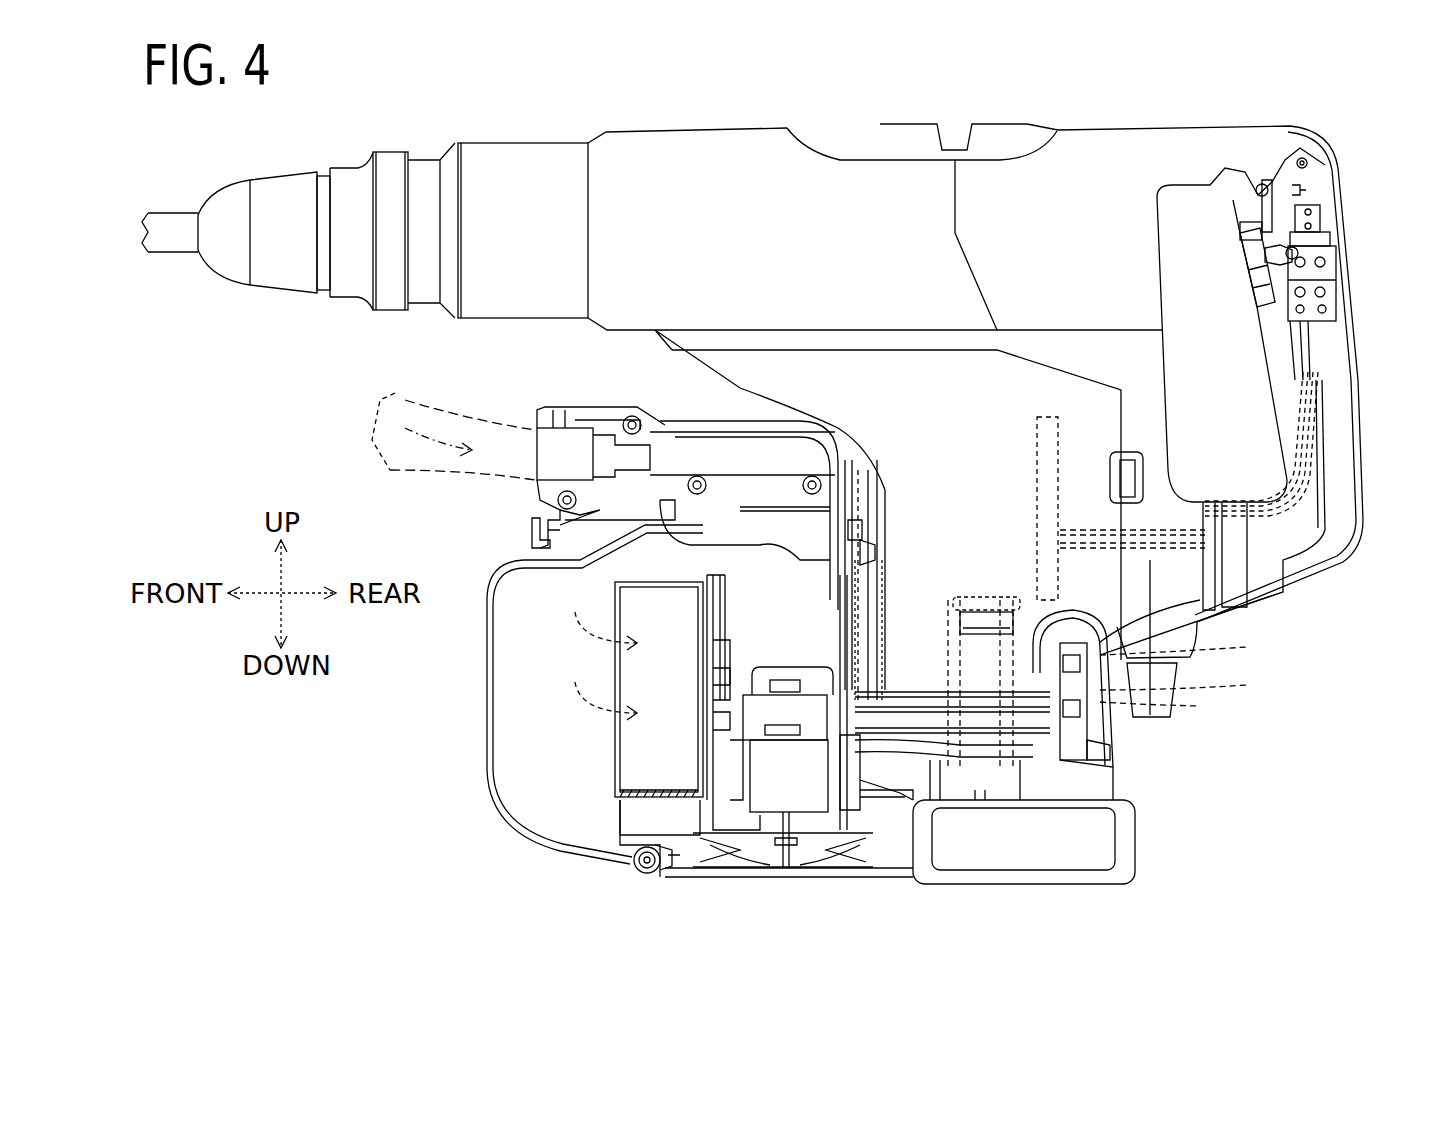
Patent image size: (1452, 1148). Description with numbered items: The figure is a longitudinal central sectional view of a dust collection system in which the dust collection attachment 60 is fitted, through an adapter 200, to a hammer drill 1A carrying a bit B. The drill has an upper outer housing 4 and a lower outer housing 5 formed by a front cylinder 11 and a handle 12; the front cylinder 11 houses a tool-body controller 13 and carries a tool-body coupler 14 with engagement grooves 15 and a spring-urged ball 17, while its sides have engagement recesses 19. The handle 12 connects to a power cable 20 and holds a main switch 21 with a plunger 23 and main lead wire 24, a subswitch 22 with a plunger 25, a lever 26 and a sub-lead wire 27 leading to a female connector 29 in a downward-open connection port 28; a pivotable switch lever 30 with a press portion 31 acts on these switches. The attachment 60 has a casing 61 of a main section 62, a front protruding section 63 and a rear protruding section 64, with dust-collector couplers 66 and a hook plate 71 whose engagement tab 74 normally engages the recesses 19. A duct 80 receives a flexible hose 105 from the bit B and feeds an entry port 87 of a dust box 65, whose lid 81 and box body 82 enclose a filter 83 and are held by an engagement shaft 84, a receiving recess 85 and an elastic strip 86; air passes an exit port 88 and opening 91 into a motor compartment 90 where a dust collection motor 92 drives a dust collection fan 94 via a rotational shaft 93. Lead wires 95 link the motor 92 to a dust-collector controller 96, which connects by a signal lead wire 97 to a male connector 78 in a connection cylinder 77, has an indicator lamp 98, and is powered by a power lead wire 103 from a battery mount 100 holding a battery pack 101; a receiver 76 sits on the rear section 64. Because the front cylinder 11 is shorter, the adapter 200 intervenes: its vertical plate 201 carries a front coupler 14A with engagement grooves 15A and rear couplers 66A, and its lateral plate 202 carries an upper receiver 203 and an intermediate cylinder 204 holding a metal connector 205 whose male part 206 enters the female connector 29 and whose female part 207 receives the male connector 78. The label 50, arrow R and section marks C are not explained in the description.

The hammer drill 1A is at (1353, 152).
The bit B is at (162, 225).
The upper outer housing 4 is at (626, 300).
The lower outer housing 5 is at (1200, 416).
The front cylinder 11 is at (970, 430).
The handle 12 is at (1335, 338).
The tool-body controller 13 is at (1045, 452).
The tool-body coupler 14 is at (845, 462).
The front coupler 14A is at (842, 596).
The engagement grooves 15 is at (886, 505).
The engagement grooves 15A is at (848, 562).
The ball 17 is at (880, 556).
The engagement recesses 19 is at (988, 598).
The power cable 20 is at (1110, 586).
The main switch 21 is at (1332, 302).
The subswitch 22 is at (1323, 215).
The plunger 23 is at (1250, 290).
The main lead wire 24 is at (1290, 403).
The plunger 25 is at (1323, 238).
The lever 26 is at (1268, 218).
The sub-lead wire 27 is at (1332, 402).
The connection port 28 is at (1205, 630).
The female connector 29 is at (1283, 593).
The switch lever 30 is at (1262, 255).
The press portion 31 is at (1258, 233).
The chuck 50 is at (350, 292).
The dust collection attachment 60 is at (518, 412).
The casing 61 is at (596, 412).
The main section 62 is at (706, 598).
The front protruding section 63 is at (560, 412).
The rear protruding section 64 is at (918, 870).
The dust box 65 is at (488, 752).
The dust-collector couplers 66 is at (893, 705).
The rear couplers 66A is at (884, 590).
The hook plate 71 is at (1020, 832).
The engagement tab 74 is at (978, 635).
The receiver 76 is at (968, 778).
The connection cylinder 77 is at (1082, 720).
The male connector 78 is at (1092, 753).
The duct 80 is at (676, 430).
The lid 81 is at (724, 642).
The box body 82 is at (492, 658).
The filter 83 is at (628, 760).
The engagement shaft 84 is at (657, 868).
The receiving recess 85 is at (640, 872).
The elastic strip 86 is at (535, 545).
The entry port 87 is at (727, 578).
The exit port 88 is at (712, 690).
The motor compartment 90 is at (732, 768).
The opening 91 is at (710, 720).
The dust collection motor 92 is at (765, 785).
The rotational shaft 93 is at (786, 868).
The dust collection fan 94 is at (750, 868).
The lead wires 95 is at (772, 668).
The dust-collector controller 96 is at (855, 860).
The signal lead wire 97 is at (862, 812).
The indicator lamp 98 is at (828, 779).
The battery mount 100 is at (1085, 768).
The battery pack 101 is at (1090, 842).
The power lead wire 103 is at (880, 882).
The flexible hose 105 is at (417, 460).
The adapter 200 is at (880, 522).
The vertical plate 201 is at (872, 530).
The lateral plate 202 is at (938, 680).
The upper receiver 203 is at (1000, 765).
The intermediate cylinder 204 is at (1178, 670).
The metal connector 205 is at (1240, 687).
The male part 206 is at (1240, 650).
The female part 207 is at (1195, 706).
The dust flow direction R is at (412, 395).
The section line C is at (905, 554).